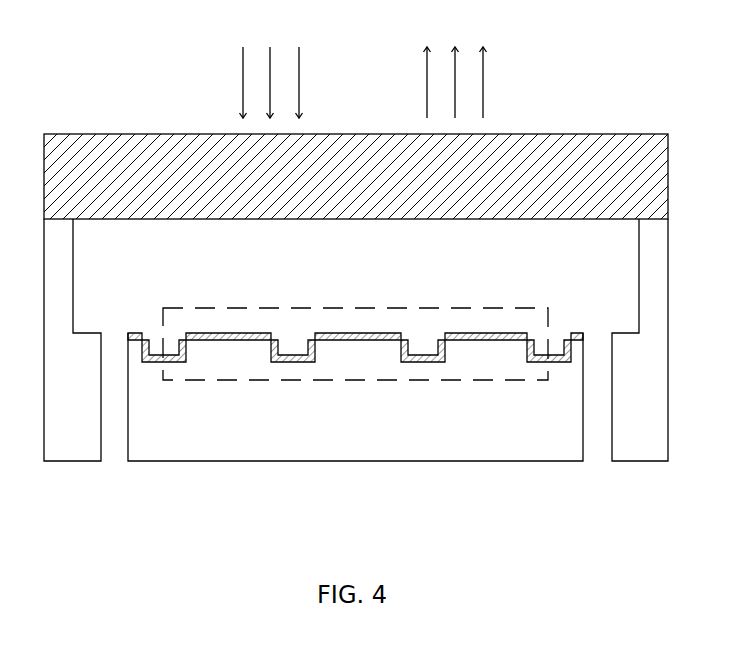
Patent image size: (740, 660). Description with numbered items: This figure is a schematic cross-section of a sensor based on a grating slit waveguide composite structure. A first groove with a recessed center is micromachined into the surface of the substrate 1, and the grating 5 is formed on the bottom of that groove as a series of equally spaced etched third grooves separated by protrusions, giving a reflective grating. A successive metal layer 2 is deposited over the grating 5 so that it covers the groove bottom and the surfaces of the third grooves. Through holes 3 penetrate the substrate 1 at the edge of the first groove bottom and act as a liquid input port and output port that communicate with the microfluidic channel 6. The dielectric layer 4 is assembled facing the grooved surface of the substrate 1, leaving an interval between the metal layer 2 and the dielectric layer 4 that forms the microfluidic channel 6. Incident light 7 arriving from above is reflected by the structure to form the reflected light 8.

The substrate 1 is at (213, 418).
The metal layer 2 is at (293, 357).
The through holes 3 is at (113, 413).
The dielectric layer 4 is at (172, 177).
The grating 5 is at (488, 318).
The microfluidic channel 6 is at (398, 260).
The incident light 7 is at (285, 82).
The reflected light 8 is at (469, 82).